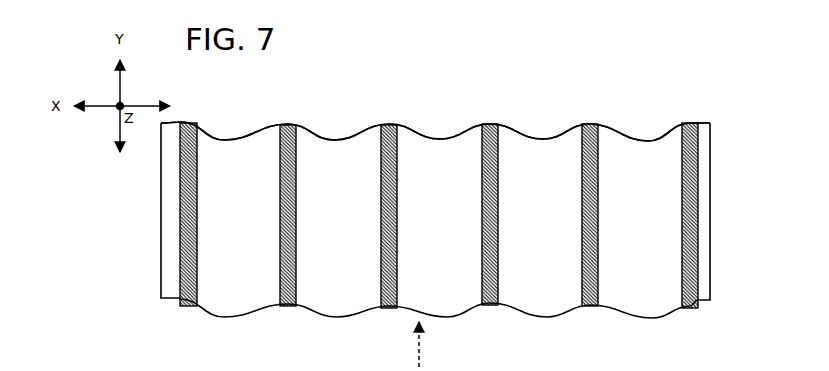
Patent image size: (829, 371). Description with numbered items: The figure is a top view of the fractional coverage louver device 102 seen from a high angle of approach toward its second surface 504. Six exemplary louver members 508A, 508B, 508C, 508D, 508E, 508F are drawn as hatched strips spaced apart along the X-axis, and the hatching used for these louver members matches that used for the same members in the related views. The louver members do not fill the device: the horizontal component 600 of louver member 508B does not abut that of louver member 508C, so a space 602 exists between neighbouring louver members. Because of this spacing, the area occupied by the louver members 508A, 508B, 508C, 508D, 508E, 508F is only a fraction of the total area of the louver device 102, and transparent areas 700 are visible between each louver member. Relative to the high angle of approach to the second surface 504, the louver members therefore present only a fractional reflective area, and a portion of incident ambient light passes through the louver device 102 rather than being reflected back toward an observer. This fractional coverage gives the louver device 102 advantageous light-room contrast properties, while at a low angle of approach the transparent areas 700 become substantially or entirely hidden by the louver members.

The fractional coverage louver device 102 is at (648, 116).
The second surface 504 is at (518, 130).
The louver member 508A is at (186, 302).
The louver member 508B is at (287, 305).
The louver member 508C is at (389, 308).
The louver member 508D is at (497, 305).
The louver member 508E is at (591, 288).
The louver member 508F is at (691, 285).
The horizontal component 600 is at (292, 126).
The space 602 is at (382, 127).
The transparent areas 700 is at (240, 231).